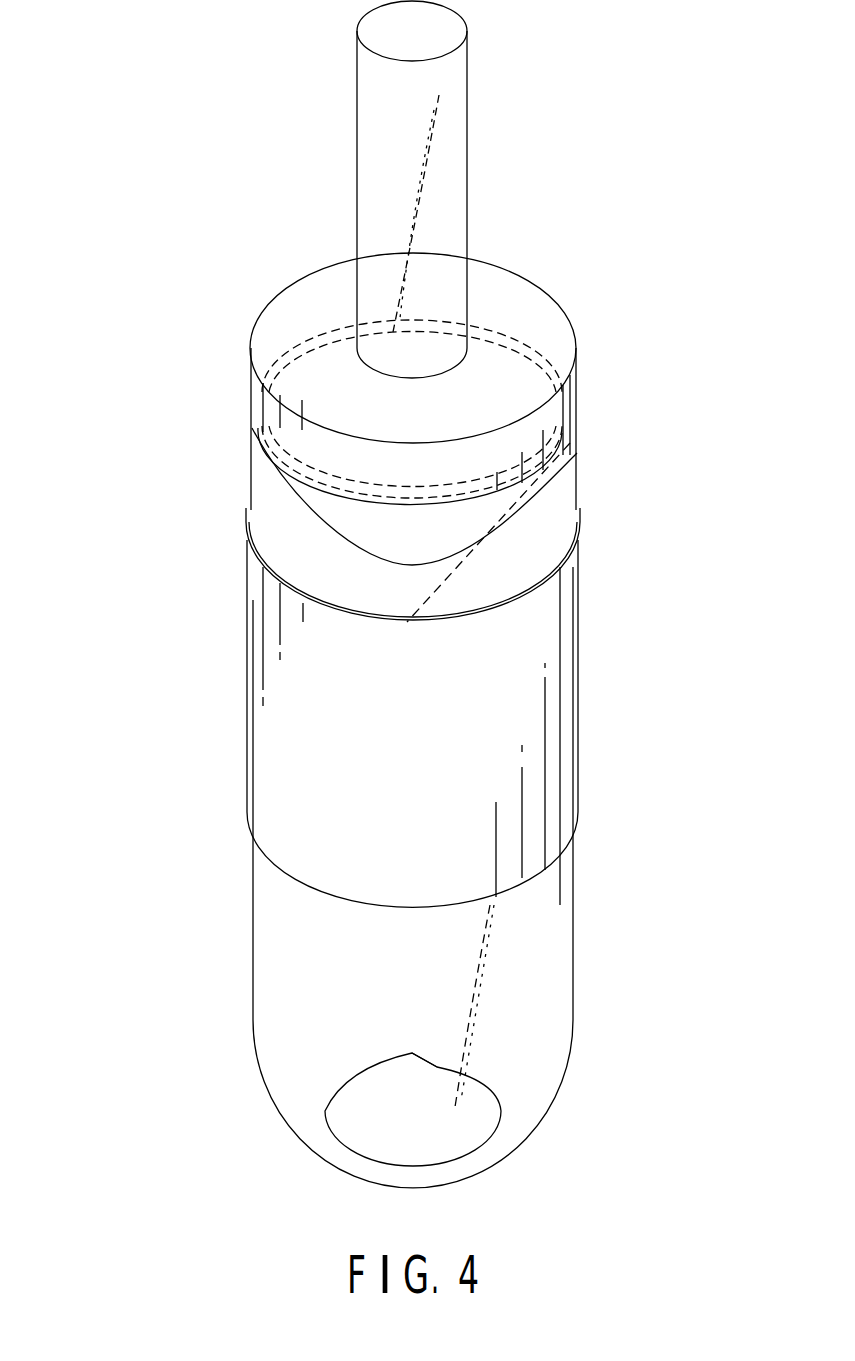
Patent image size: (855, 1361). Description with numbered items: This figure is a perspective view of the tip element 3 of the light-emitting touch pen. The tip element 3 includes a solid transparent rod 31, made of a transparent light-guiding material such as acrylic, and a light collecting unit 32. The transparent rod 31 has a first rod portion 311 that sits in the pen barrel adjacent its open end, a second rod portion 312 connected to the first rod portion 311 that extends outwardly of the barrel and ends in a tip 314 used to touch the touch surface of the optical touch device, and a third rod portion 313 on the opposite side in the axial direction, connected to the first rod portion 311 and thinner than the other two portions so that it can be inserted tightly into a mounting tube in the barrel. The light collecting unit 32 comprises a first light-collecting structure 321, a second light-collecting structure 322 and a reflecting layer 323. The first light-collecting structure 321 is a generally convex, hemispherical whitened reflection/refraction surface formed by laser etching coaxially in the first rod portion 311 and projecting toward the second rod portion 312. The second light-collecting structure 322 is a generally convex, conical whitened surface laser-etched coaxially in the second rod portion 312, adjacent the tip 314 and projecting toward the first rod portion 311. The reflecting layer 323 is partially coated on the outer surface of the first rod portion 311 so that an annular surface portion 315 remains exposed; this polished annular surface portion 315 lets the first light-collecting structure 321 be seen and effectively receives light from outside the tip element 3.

The tip element 3 is at (645, 298).
The transparent rod 31 is at (105, 315).
The first rod portion 311 is at (293, 683).
The second rod portion 312 is at (313, 950).
The third rod portion 313 is at (390, 180).
The tip 314 is at (413, 1187).
The annular surface portion 315 is at (576, 478).
The light collecting unit 32 is at (668, 697).
The first light-collecting structure 321 is at (500, 540).
The second light-collecting structure 322 is at (443, 1068).
The reflecting layer 323 is at (520, 777).